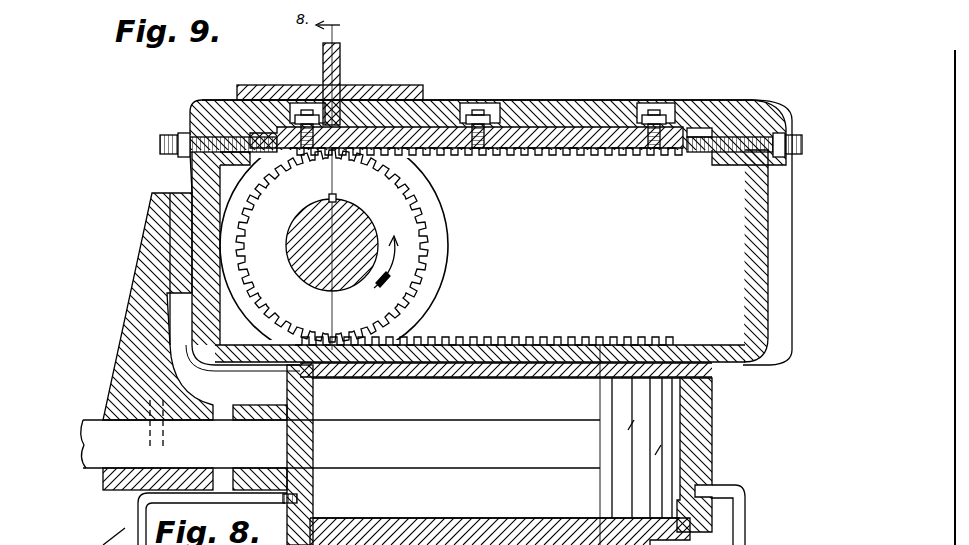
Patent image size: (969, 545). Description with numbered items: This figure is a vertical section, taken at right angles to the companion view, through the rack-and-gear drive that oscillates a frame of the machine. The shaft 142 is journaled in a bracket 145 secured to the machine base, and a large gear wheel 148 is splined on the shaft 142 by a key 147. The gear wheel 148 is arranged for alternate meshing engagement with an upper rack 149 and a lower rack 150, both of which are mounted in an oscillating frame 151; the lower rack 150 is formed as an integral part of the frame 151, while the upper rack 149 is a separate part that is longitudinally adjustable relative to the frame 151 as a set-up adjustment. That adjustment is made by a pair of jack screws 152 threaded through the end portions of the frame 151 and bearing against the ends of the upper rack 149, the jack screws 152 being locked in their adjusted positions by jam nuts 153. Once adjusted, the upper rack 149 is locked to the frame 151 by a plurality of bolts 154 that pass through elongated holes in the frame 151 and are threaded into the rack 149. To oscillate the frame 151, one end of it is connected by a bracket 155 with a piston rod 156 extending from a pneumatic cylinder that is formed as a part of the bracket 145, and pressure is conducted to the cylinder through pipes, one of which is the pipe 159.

The shaft 142 is at (316, 278).
The bracket 145 is at (341, 66).
The key 147 is at (334, 196).
The large gear wheel 148 is at (408, 212).
The upper rack 149 is at (600, 152).
The lower rack 150 is at (458, 342).
The oscillating frame 151 is at (543, 112).
The jack screws 152 is at (164, 138).
The jam nuts 153 is at (184, 136).
The bolts 154 is at (306, 112).
The bracket 155 is at (140, 268).
The piston rod 156 is at (430, 440).
The pipe 159 is at (738, 508).